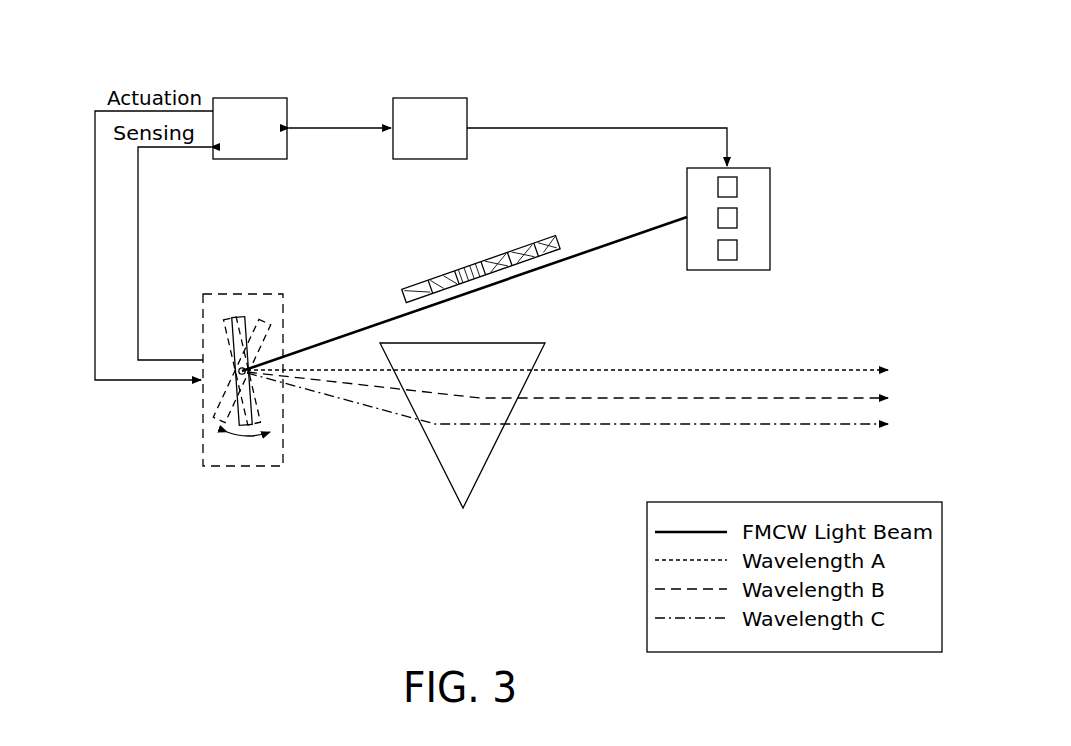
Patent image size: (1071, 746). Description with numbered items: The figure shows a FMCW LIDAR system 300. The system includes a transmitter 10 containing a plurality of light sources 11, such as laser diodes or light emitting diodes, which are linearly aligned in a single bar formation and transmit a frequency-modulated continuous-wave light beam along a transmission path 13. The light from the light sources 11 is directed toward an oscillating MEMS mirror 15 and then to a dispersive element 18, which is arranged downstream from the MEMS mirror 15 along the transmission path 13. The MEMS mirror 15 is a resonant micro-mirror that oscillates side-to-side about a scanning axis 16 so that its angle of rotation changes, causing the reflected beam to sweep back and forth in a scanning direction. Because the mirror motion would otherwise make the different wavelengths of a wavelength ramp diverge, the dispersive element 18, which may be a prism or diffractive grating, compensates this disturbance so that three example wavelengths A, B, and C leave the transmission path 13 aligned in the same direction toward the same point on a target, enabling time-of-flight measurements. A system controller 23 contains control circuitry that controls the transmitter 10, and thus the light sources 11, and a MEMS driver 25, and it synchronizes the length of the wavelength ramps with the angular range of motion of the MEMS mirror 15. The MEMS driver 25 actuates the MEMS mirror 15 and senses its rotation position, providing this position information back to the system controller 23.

The FMCW LIDAR system 300 is at (134, 58).
The MEMS driver 25 is at (254, 98).
The system controller 23 is at (430, 98).
The transmitter 10 is at (757, 168).
The light sources 11 is at (737, 187).
The transmission path 13 is at (642, 214).
The MEMS mirror 15 is at (234, 316).
The scanning axis 16 is at (240, 372).
The dispersive element 18 is at (483, 467).